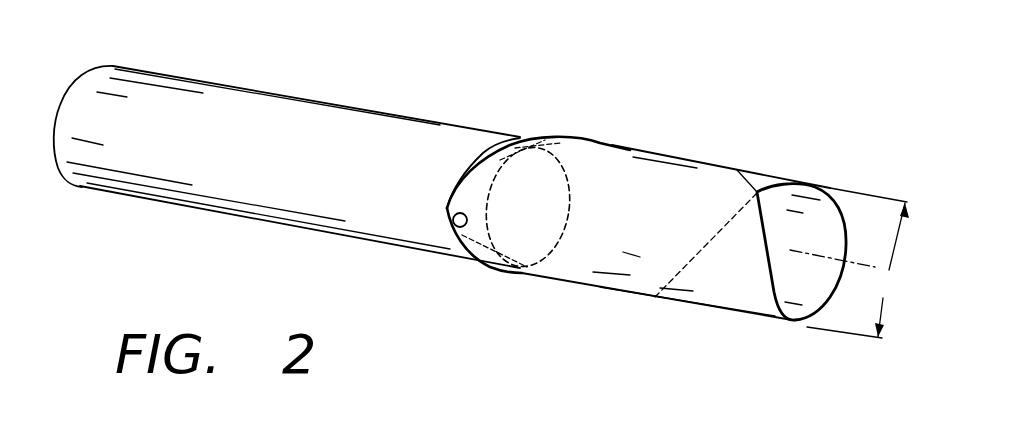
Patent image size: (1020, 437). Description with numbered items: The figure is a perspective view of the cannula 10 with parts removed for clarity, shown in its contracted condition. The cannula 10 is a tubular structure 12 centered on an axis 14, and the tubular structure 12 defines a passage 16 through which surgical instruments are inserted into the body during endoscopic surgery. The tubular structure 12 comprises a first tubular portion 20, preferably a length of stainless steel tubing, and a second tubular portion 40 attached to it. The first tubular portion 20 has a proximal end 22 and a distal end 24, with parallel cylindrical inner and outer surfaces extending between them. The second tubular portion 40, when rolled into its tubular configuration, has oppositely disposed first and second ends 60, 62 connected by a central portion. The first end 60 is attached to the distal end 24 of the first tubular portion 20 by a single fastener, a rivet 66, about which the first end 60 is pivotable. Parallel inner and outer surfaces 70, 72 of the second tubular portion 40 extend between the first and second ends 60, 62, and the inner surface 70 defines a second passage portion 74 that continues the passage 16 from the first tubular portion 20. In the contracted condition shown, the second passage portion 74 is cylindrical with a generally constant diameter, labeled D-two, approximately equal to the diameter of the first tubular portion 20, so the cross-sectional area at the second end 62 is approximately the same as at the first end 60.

The cannula 10 is at (450, 74).
The tubular structure 12 is at (442, 119).
The axis 14 is at (869, 266).
The passage 16 is at (808, 245).
The first tubular portion 20 is at (251, 81).
The proximal end 22 is at (67, 97).
The distal end 24 is at (575, 179).
The second tubular portion 40 is at (708, 150).
The first end 60 is at (485, 152).
The second end 62 is at (840, 207).
The rivet 66 is at (452, 228).
The inner surface 70 is at (823, 213).
The outer surface 72 is at (761, 187).
The second passage portion 74 is at (818, 291).